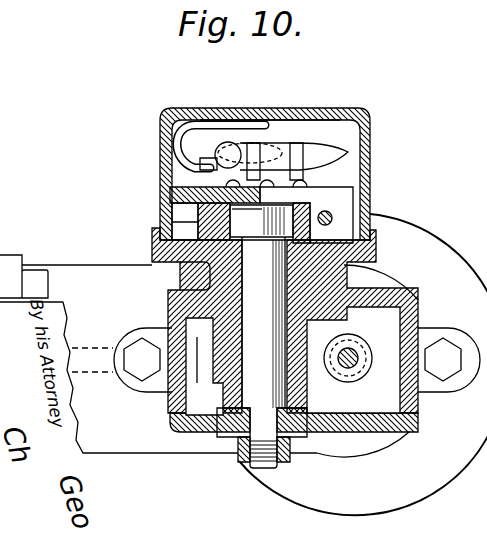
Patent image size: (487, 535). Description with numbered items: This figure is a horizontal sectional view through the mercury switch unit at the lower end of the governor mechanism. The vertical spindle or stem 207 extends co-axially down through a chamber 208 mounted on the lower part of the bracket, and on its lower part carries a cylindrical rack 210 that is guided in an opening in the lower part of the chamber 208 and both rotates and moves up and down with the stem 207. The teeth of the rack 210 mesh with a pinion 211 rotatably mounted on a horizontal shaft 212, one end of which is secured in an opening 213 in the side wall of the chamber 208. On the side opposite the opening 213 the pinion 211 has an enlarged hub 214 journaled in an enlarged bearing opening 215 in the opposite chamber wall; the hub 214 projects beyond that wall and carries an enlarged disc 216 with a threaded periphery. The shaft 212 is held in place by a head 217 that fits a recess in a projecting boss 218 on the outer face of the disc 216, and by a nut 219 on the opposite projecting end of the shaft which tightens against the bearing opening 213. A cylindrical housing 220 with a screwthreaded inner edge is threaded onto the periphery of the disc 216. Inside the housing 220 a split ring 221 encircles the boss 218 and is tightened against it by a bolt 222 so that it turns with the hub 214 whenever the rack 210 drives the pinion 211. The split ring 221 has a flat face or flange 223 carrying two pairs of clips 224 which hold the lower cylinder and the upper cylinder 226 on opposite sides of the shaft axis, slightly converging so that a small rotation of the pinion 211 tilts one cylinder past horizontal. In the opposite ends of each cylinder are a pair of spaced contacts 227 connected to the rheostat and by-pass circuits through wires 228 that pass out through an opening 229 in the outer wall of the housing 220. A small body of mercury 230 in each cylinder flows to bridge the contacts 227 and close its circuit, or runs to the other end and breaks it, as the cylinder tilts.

The vertical spindle 207 is at (352, 351).
The chamber 208 is at (408, 433).
The cylindrical rack 210 is at (360, 370).
The pinion 211 is at (186, 392).
The horizontal shaft 212 is at (230, 430).
The opening 213 is at (297, 430).
The enlarged hub 214 is at (172, 302).
The enlarged bearing opening 215 is at (198, 274).
The enlarged disc 216 is at (375, 247).
The head 217 is at (310, 208).
The projecting boss 218 is at (198, 214).
The nut 219 is at (242, 458).
The cylindrical housing 220 is at (367, 128).
The split ring 221 is at (200, 232).
The bolt 222 is at (333, 218).
The flange 223 is at (173, 195).
The clips 224 is at (300, 150).
The upper cylinder 226 is at (349, 152).
The contacts 227 is at (237, 185).
The wires 228 is at (205, 124).
The opening 229 is at (285, 111).
The body of mercury 230 is at (275, 150).